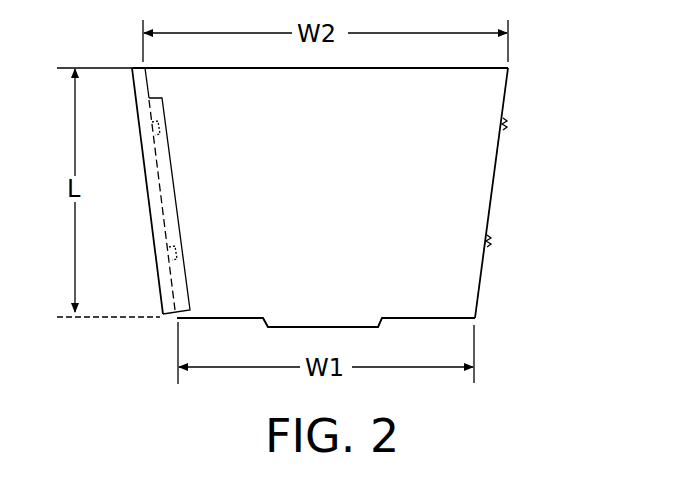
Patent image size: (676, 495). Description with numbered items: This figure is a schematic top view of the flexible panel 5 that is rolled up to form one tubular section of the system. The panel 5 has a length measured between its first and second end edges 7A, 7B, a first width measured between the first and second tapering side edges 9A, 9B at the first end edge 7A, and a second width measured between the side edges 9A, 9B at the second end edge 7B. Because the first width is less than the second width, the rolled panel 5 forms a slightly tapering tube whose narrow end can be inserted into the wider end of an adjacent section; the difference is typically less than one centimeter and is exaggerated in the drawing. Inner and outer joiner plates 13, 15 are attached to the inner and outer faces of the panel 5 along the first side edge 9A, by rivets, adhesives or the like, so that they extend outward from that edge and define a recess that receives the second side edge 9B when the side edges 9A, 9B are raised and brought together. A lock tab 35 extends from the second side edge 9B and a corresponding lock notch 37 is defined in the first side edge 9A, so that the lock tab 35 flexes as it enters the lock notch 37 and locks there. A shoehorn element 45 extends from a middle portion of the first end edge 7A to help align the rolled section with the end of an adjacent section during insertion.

The flexible panel 5 is at (508, 68).
The first end edge 7A is at (442, 318).
The second end edge 7B is at (458, 69).
The first side edge 9A is at (147, 80).
The second side edge 9B is at (495, 175).
The inner joiner plate 13 is at (177, 192).
The outer joiner plate 15 is at (132, 85).
The lock tab 35 is at (490, 238).
The lock notch 37 is at (157, 128).
The shoehorn element 45 is at (330, 318).